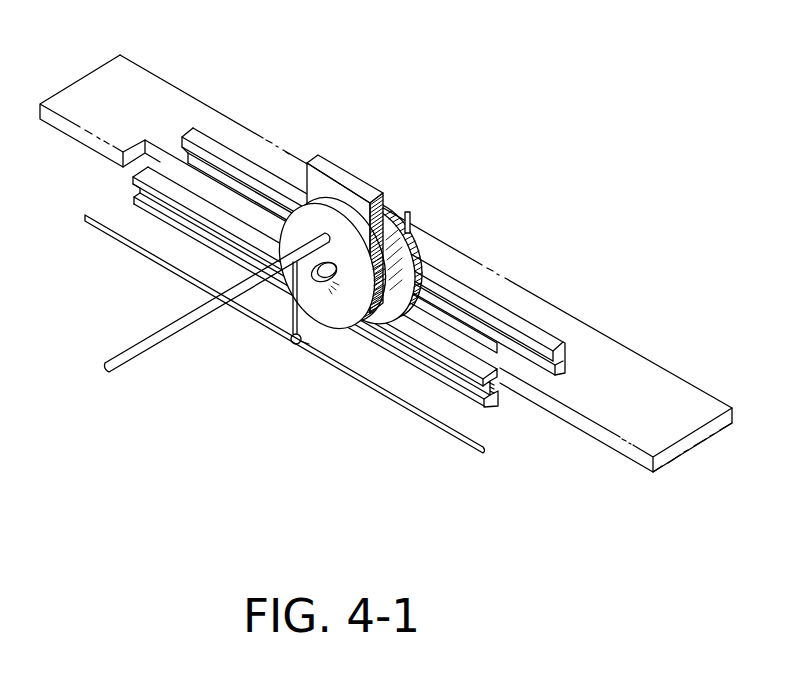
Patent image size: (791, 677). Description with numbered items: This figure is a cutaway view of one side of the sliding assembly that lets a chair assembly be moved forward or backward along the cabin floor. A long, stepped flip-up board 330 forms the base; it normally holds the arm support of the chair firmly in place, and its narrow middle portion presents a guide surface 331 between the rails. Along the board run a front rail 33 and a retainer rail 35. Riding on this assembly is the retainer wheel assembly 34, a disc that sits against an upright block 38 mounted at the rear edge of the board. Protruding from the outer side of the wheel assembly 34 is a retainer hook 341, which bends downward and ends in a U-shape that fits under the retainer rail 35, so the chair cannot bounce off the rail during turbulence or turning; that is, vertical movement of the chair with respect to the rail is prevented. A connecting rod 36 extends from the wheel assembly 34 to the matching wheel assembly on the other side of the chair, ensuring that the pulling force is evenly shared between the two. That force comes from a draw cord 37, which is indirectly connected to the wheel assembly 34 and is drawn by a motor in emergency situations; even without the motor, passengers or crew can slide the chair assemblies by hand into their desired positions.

The flip-up board 330 is at (149, 85).
The guide surface of base plate 331 is at (457, 327).
The front guide rail 33 is at (430, 373).
The retainer wheel assembly 34 is at (328, 318).
The retainer rail 35 is at (534, 327).
The connecting rod 36 is at (157, 344).
The draw cord 37 is at (445, 432).
The block 38 is at (355, 161).
The retainer hook 341 is at (410, 212).